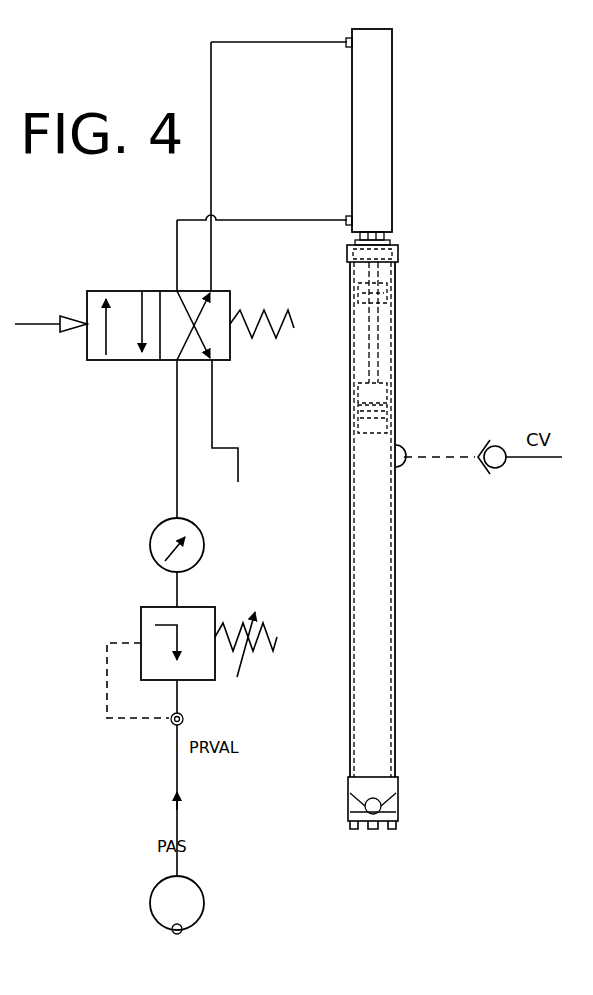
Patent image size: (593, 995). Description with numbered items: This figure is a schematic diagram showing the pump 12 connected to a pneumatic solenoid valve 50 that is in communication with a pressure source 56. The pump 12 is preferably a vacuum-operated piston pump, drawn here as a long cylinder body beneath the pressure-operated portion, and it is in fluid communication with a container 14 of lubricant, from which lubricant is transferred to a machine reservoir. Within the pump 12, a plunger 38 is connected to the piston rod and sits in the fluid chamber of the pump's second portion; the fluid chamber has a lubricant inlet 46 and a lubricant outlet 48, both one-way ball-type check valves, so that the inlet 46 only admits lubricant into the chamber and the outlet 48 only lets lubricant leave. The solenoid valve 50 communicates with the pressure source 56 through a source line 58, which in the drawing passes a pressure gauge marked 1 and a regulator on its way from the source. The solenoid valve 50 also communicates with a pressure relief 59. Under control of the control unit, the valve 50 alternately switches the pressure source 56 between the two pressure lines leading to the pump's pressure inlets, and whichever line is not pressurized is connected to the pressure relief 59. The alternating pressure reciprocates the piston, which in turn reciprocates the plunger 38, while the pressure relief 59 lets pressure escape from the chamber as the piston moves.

The pressure gauge 1 is at (183, 545).
The pump 12 is at (338, 347).
The container 14 is at (51, 333).
The plunger 38 is at (388, 416).
The lubricant inlet 46 is at (402, 463).
The lubricant outlet 48 is at (398, 797).
The pneumatic solenoid valve 50 is at (122, 290).
The pressure source 56 is at (157, 887).
The source line 58 is at (177, 478).
The pressure relief 59 is at (212, 420).